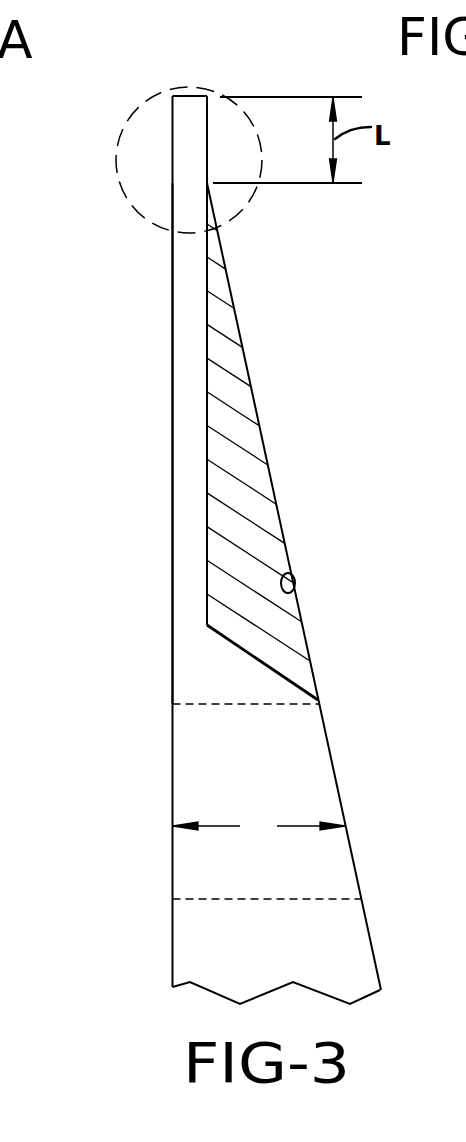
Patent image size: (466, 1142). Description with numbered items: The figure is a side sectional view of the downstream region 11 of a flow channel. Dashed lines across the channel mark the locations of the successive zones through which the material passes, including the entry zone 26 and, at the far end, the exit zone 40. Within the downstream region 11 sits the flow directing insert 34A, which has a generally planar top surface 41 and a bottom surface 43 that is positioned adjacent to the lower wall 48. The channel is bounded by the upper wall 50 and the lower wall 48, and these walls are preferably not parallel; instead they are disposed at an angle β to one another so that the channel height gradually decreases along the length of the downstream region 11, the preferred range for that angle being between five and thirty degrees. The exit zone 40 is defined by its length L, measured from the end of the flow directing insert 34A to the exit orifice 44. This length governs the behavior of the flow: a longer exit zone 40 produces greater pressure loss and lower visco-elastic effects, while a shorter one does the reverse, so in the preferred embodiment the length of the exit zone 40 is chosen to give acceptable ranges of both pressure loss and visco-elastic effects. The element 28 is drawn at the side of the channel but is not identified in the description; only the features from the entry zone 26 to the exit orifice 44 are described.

The downstream region 11 is at (126, 966).
The entry zone 26 is at (270, 770).
The pressure side wall 28 is at (187, 547).
The flow directing insert 34A is at (246, 457).
The exit zone 40 is at (187, 125).
The top surface 41 is at (206, 364).
The bottom surface 43 is at (295, 594).
The exit orifice 44 is at (189, 95).
The lower wall 48 is at (337, 775).
The upper wall 50 is at (172, 923).